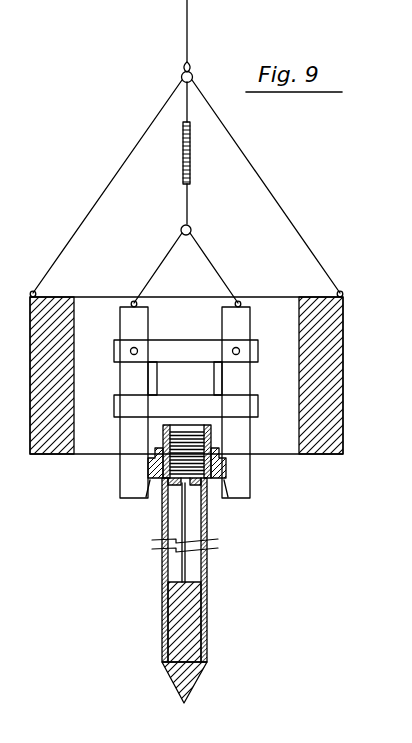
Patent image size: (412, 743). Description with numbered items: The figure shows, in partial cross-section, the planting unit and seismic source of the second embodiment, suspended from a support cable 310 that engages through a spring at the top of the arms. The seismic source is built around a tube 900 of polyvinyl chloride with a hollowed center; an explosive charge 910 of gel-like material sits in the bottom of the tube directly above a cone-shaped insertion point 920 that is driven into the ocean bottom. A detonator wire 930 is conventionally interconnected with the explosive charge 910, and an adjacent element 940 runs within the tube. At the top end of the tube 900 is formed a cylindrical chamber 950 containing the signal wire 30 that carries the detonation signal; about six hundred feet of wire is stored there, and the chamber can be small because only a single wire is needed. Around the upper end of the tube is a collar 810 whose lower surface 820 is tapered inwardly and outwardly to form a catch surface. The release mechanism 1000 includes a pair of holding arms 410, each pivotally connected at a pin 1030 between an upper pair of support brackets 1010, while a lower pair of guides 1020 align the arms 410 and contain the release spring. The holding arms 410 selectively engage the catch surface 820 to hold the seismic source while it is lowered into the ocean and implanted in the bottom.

The support cable 310 is at (192, 33).
The collar 810 is at (190, 150).
The release mechanism 1000 is at (276, 357).
The holding arm 410 is at (120, 330).
The support brackets 1010 is at (114, 352).
The guides 1020 is at (114, 405).
The pin 1030 is at (138, 351).
The cylindrical chamber 950 is at (182, 424).
The signal wire 30 is at (172, 445).
The catch surface 820 is at (206, 482).
The rod 940 is at (182, 492).
The detonator wire 930 is at (187, 516).
The tube 900 is at (176, 567).
The explosive charge 910 is at (196, 622).
The cone-shaped insertion point 920 is at (190, 683).